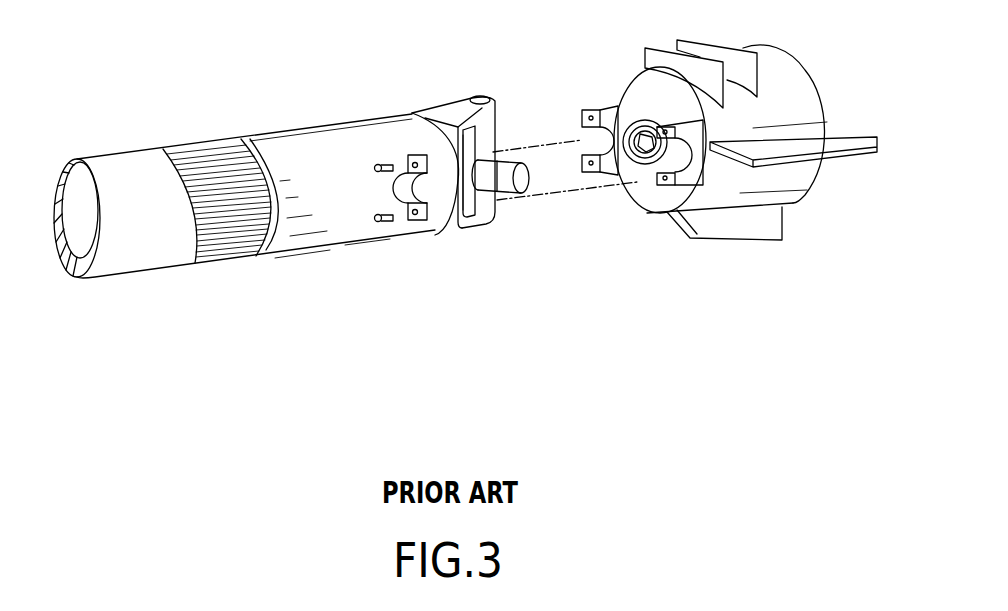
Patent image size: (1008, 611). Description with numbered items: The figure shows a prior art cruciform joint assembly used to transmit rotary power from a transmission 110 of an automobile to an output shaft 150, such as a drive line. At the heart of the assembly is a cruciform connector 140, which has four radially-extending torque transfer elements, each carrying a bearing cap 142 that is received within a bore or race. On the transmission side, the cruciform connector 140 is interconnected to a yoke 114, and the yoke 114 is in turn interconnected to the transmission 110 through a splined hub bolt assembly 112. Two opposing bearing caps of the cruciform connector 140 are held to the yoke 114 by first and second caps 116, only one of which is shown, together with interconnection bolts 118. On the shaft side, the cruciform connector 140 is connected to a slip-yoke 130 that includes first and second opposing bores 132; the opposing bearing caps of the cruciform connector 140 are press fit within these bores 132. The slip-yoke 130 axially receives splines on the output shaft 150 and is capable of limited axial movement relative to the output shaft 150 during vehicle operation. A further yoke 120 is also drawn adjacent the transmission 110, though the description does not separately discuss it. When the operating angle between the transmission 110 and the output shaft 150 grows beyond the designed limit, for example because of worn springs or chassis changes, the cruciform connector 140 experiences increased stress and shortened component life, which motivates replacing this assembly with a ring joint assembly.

The transmission 110 is at (802, 78).
The splined hub bolt assembly 112 is at (647, 145).
The yoke 114 is at (682, 180).
The caps 116 is at (427, 214).
The interconnection bolts 118 is at (377, 165).
The yoke 120 is at (582, 128).
The slip-yoke 130 is at (446, 100).
The opposing bores 132 is at (477, 96).
The cruciform connector 140 is at (488, 200).
The bearing cap 142 is at (526, 182).
The output shaft 150 is at (145, 253).